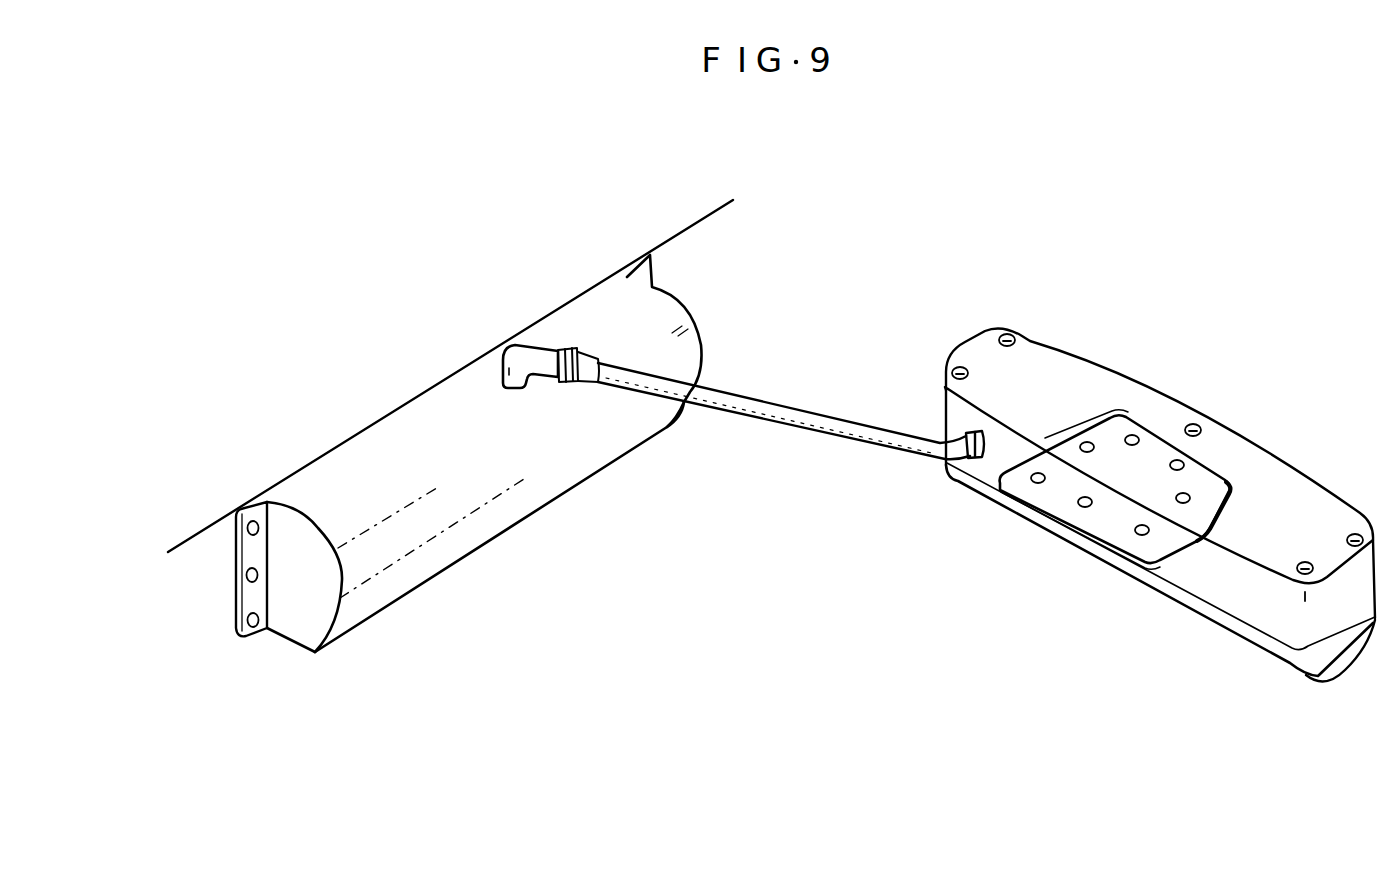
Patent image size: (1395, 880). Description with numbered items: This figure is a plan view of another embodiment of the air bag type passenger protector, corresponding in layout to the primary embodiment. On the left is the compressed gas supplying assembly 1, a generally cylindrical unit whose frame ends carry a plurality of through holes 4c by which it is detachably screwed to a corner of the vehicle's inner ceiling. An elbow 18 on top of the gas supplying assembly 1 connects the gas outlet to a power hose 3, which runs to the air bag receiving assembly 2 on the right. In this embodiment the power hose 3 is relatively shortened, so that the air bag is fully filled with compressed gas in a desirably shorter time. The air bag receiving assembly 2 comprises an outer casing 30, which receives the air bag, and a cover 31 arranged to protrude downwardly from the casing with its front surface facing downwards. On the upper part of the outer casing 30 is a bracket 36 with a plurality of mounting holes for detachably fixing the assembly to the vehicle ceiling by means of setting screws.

The compressed gas supplying assembly 1 is at (473, 522).
The air bag receiving assembly 2 is at (1137, 380).
The power hose 3 is at (796, 417).
The through holes 4c is at (244, 508).
The elbow 18 is at (517, 358).
The outer casing 30 is at (1241, 595).
The cover 31 is at (1340, 663).
The bracket 36 is at (1120, 505).